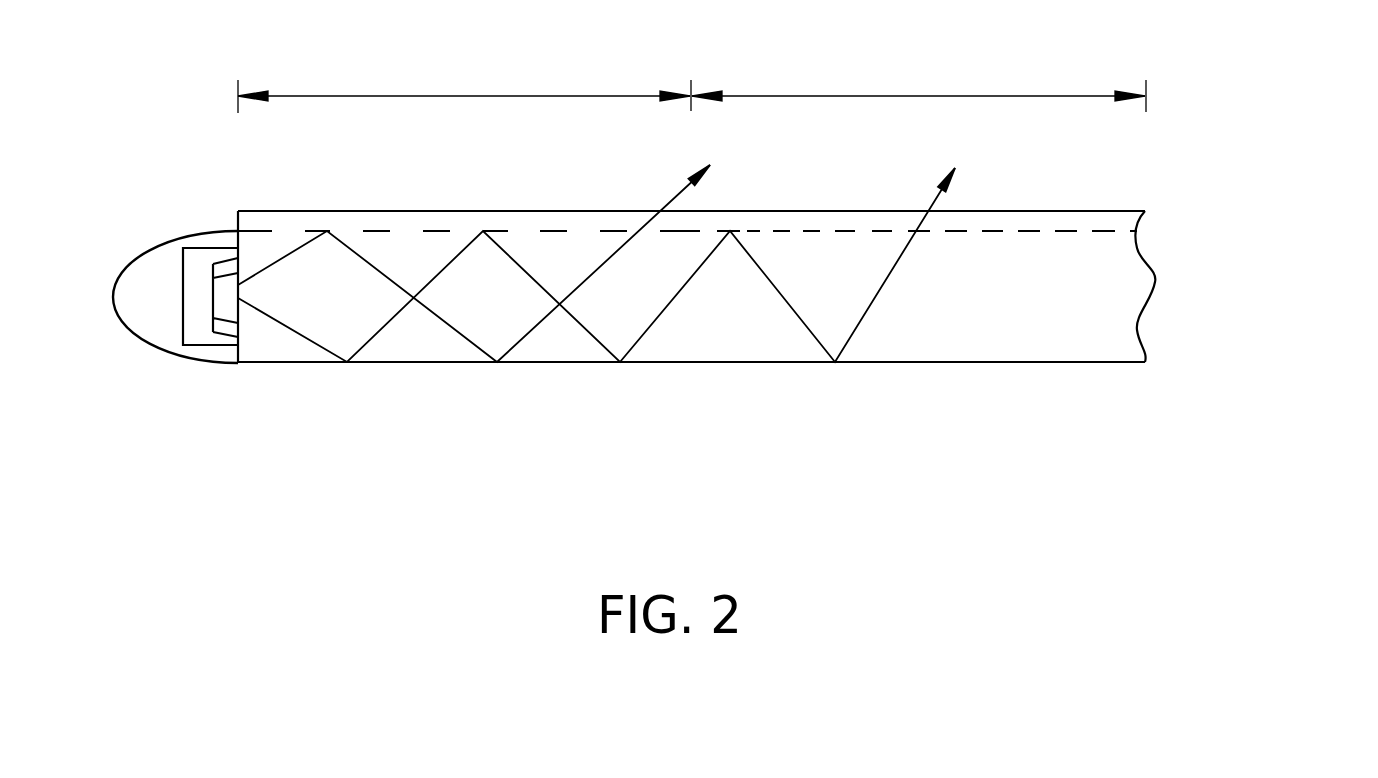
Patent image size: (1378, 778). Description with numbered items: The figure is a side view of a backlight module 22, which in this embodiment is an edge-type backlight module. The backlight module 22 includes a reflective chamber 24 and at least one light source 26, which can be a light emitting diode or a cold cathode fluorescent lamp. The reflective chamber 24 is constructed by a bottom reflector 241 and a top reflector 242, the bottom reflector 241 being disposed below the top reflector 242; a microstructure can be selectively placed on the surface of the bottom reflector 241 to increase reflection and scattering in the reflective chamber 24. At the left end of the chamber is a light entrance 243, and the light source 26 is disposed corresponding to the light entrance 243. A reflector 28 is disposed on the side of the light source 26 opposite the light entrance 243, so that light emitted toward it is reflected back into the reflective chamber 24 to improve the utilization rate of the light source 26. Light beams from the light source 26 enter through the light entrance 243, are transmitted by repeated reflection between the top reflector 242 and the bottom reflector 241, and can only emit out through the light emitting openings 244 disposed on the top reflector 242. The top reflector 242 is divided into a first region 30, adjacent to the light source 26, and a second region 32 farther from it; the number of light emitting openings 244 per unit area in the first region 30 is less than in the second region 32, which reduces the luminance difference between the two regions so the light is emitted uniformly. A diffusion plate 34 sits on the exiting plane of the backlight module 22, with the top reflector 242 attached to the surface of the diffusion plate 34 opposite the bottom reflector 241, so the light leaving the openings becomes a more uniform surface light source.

The backlight module 22 is at (1185, 95).
The reflective chamber 24 is at (1205, 158).
The bottom reflector 241 is at (1110, 362).
The top reflector 242 is at (1105, 232).
The light entrance 243 is at (252, 295).
The light emitting openings 244 is at (408, 232).
The light source 26 is at (200, 328).
The reflector 28 is at (162, 260).
The first region 30 is at (464, 87).
The second region 32 is at (919, 86).
The diffusion plate 34 is at (265, 218).